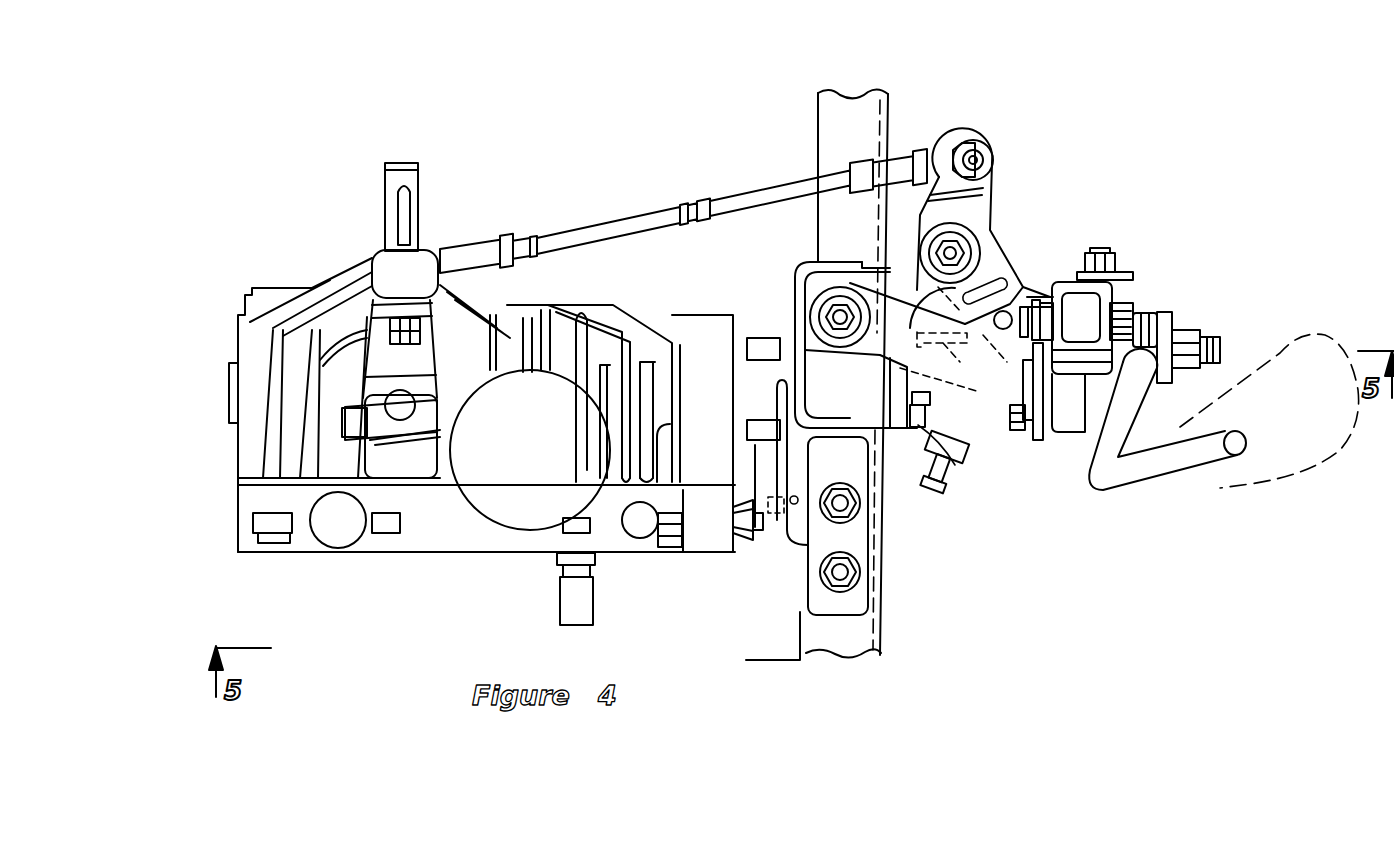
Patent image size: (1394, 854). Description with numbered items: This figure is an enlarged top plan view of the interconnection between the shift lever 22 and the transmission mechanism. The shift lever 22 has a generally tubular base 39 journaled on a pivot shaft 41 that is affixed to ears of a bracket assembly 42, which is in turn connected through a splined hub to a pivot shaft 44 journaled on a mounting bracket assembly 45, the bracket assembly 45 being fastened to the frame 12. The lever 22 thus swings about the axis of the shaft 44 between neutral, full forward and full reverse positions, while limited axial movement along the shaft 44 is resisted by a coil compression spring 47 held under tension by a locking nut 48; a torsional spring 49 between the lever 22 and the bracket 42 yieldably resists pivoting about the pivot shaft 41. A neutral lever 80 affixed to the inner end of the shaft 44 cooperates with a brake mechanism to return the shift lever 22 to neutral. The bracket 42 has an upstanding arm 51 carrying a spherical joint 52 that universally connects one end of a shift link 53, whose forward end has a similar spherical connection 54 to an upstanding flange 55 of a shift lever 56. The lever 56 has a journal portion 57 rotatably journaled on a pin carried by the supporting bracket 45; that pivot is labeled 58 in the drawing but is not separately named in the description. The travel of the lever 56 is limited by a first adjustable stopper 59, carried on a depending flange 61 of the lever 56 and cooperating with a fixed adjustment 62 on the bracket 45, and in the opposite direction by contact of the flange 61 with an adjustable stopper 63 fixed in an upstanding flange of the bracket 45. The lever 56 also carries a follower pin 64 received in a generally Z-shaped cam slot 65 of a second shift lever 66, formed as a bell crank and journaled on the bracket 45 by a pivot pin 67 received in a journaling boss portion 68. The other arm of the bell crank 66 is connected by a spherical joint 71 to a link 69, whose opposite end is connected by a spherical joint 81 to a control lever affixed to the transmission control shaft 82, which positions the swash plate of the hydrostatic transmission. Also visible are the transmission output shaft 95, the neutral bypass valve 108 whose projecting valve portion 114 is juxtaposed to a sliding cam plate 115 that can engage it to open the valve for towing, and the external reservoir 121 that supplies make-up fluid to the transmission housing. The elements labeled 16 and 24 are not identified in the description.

The frame 12 is at (838, 100).
The lever handle 16 is at (410, 166).
The shift lever 22 is at (1143, 477).
The adjustment assembly 24 is at (1154, 146).
The tubular base 39 is at (1114, 272).
The pivot shaft 41 is at (1112, 255).
The bracket assembly 42 is at (1097, 250).
The pivot shaft 44 is at (1221, 355).
The mounting bracket assembly 45 is at (995, 448).
The coil compression spring 47 is at (1163, 315).
The locking nut 48 is at (1190, 370).
The torsional spring 49 is at (1141, 316).
The upstanding arm 51 is at (1028, 427).
The spherical joint 52 is at (1013, 432).
The shift link 53 is at (1116, 303).
The spherical connection 54 is at (1023, 320).
The upstanding flange 55 is at (1070, 260).
The shift lever 56 is at (893, 373).
The journal portion 57 is at (820, 307).
The pivot bolt 58 is at (843, 328).
The first adjustable stopper 59 is at (950, 440).
The depending flange 61 is at (947, 393).
The fixed adjustment 62 is at (953, 339).
The adjustable stopper 63 is at (925, 418).
The follower pin 64 is at (1003, 308).
The Z-shaped cam slot 65 is at (994, 283).
The second shift lever 66 is at (1012, 250).
The pivot pin 67 is at (928, 244).
The journaling boss portion 68 is at (943, 226).
The link 69 is at (632, 222).
The spherical joint 71 is at (984, 163).
The neutral lever 80 is at (780, 400).
The spherical joint 81 is at (403, 340).
The transmission control shaft 82 is at (403, 403).
The output shaft 95 is at (582, 603).
The neutral bypass valve 108 is at (741, 556).
The projecting valve portion 114 is at (758, 532).
The cam plate 115 is at (773, 520).
The external reservoir 121 is at (463, 493).